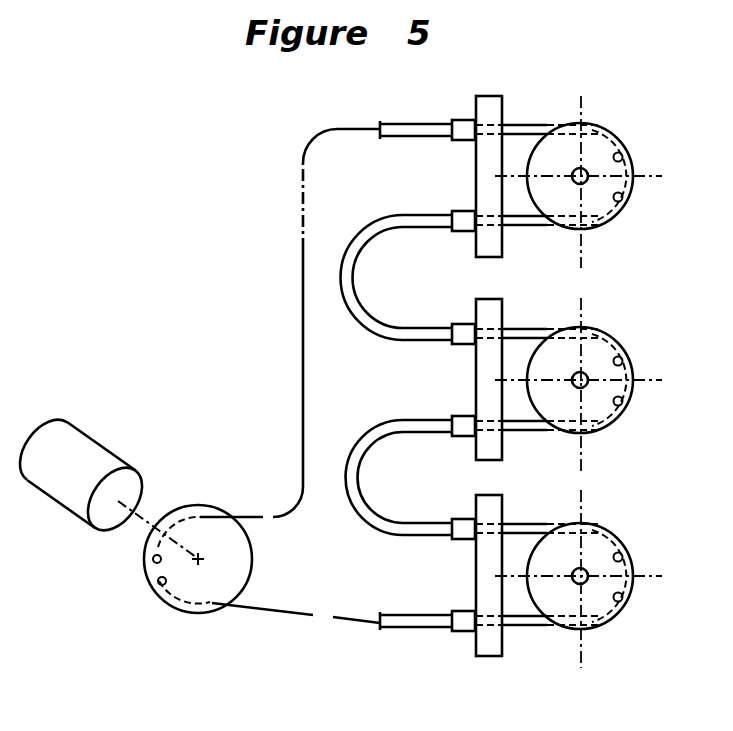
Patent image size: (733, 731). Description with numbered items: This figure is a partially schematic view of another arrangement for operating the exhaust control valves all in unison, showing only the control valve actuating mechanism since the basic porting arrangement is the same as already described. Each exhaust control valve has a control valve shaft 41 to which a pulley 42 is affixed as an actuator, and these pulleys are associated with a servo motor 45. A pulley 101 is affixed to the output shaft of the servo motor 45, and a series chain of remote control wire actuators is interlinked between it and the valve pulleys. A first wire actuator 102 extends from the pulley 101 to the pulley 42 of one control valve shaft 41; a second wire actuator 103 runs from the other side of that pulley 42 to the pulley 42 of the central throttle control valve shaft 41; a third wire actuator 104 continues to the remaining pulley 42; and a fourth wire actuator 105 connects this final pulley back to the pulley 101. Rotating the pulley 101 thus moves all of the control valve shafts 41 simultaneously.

The control valve shaft 41 is at (592, 172).
The pulley 42 is at (633, 187).
The servo motor 45 is at (98, 442).
The pulley 101 is at (202, 504).
The first wire actuator 102 is at (302, 250).
The second wire actuator 103 is at (508, 227).
The third wire actuator 104 is at (508, 431).
The fourth wire actuator 105 is at (510, 628).